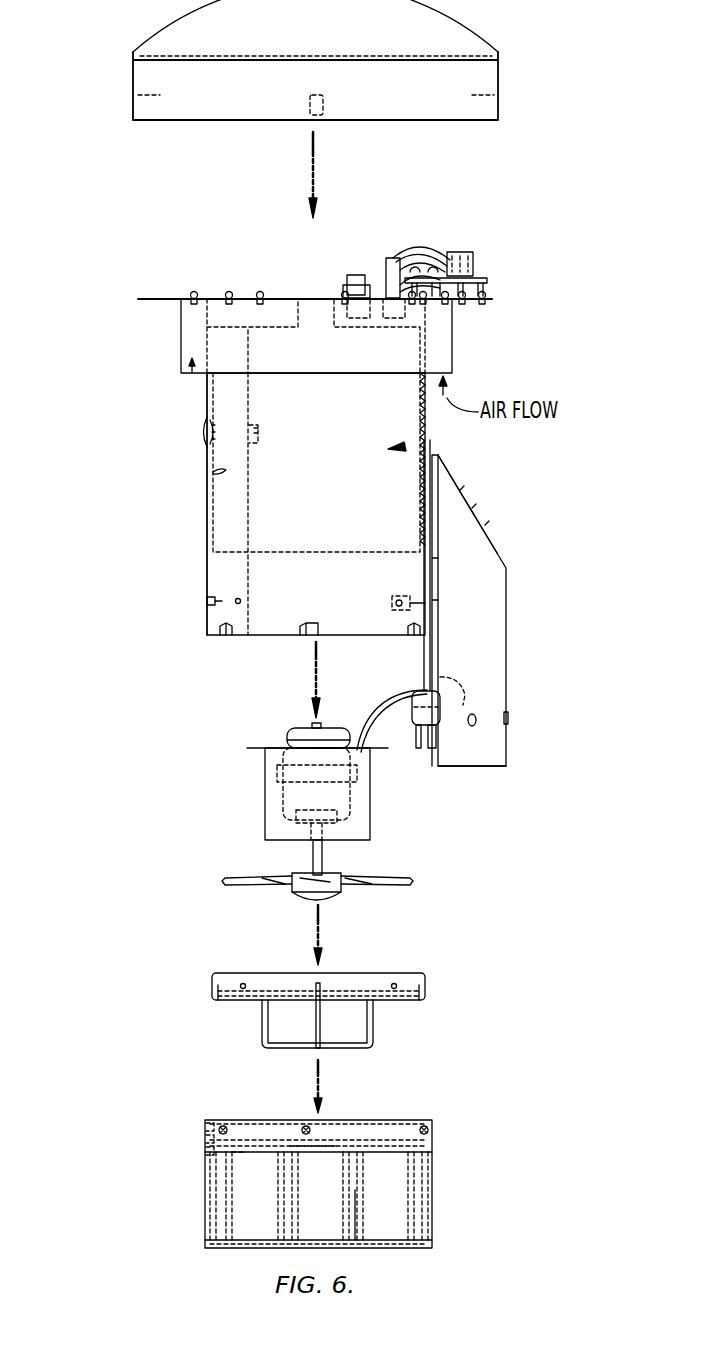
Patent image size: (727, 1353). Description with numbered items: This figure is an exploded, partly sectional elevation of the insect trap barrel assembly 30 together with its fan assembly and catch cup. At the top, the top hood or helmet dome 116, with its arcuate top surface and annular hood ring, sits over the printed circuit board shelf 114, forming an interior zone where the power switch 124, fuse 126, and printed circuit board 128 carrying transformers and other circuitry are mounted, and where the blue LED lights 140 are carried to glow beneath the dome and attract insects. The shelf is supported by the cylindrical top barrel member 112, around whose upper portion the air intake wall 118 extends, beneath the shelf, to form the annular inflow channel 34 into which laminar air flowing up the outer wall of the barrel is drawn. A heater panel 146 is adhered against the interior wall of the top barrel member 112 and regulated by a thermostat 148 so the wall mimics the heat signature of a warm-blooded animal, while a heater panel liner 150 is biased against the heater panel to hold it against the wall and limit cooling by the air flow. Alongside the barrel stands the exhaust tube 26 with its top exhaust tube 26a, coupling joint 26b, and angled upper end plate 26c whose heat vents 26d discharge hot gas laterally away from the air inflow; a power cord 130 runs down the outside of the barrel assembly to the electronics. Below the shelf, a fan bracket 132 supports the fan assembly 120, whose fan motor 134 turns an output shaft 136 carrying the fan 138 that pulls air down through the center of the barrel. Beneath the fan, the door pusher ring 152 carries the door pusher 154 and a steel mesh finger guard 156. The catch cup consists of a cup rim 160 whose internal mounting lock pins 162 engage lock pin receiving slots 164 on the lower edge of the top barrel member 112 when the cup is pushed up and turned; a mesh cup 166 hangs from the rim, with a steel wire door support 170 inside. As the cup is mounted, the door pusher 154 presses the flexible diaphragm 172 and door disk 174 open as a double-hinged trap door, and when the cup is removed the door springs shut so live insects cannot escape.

The top hood (helmet dome) 116 is at (477, 22).
The printed circuit board shelf 114 is at (145, 298).
The blue LED lights 140 is at (229, 292).
The air intake wall 118 is at (443, 348).
The annular inflow channel 34 is at (190, 379).
The power switch 124 is at (357, 285).
The fuse 126 is at (393, 288).
The printed circuit board 128 is at (483, 272).
The top barrel member 112 is at (268, 475).
The heater panel 146 is at (205, 397).
The thermostat 148 is at (207, 427).
The heater panel liner 150 is at (213, 473).
The insect trap barrel assembly 30 is at (405, 444).
The lock pin receiving slots 164 is at (306, 637).
The exhaust tube 26 is at (522, 682).
The top exhaust tube 26a is at (494, 726).
The coupling joint 26b is at (485, 768).
The upper end plate 26c is at (498, 553).
The heat vents 26d is at (485, 525).
The power cord 130 is at (427, 652).
The fan assembly 120 is at (332, 781).
The fan bracket 132 is at (372, 788).
The fan motor 134 is at (286, 793).
The output shaft 136 is at (320, 858).
The fan 138 is at (225, 878).
The door pusher ring 152 is at (428, 985).
The door pusher 154 is at (362, 1020).
The finger guard 156 is at (395, 1002).
The cup rim 160 is at (327, 1171).
The mounting lock pins 162 is at (210, 1128).
The mesh cup 166 is at (433, 1185).
The door support 170 is at (355, 1190).
The flexible diaphragm 172 is at (245, 1152).
The door disk 174 is at (335, 1140).